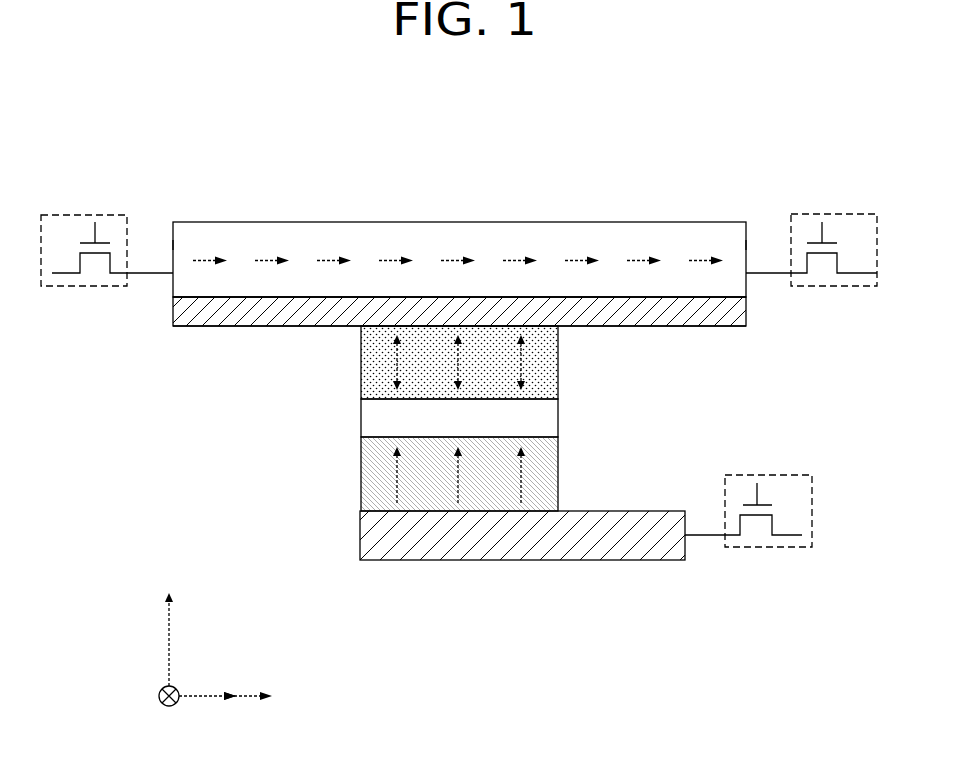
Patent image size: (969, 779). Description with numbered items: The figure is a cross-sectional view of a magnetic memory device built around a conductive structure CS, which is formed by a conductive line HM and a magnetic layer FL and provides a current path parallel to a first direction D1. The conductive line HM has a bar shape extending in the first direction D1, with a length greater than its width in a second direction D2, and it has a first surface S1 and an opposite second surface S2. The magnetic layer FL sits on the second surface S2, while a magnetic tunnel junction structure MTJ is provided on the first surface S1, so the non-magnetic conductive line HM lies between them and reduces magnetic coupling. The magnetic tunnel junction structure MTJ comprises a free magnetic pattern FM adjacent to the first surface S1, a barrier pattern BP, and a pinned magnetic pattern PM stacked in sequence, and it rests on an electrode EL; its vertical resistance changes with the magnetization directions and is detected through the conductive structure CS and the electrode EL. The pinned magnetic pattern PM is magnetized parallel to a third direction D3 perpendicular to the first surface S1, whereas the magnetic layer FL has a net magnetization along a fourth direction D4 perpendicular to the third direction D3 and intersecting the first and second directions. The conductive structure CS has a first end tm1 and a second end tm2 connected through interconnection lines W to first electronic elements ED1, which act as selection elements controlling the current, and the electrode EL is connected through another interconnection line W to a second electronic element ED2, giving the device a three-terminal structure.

The conductive structure CS is at (459, 212).
The magnetic layer FL is at (363, 223).
The conductive line HM is at (348, 142).
The first surface S1 is at (717, 327).
The second surface S2 is at (702, 297).
The first end tm1 is at (746, 243).
The second end tm2 is at (173, 243).
The first electronic element ED1 is at (83, 213).
The second electronic element ED2 is at (792, 548).
The interconnection line W is at (145, 276).
The magnetic tunnel junction structure MTJ is at (380, 418).
The free magnetic pattern FM is at (372, 363).
The barrier pattern BP is at (372, 418).
The pinned magnetic pattern PM is at (417, 474).
The electrode EL is at (372, 533).
The first direction D1 is at (241, 697).
The second direction D2 is at (169, 712).
The third direction D3 is at (169, 626).
The fourth direction D4 is at (235, 715).